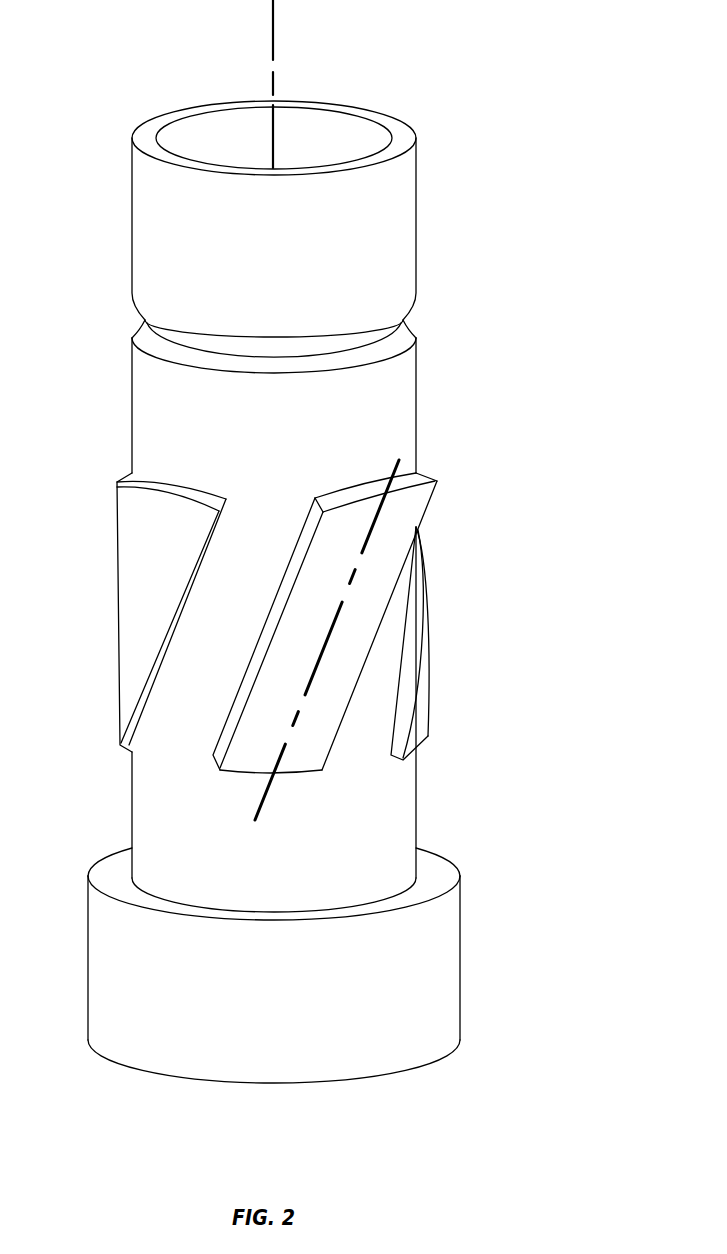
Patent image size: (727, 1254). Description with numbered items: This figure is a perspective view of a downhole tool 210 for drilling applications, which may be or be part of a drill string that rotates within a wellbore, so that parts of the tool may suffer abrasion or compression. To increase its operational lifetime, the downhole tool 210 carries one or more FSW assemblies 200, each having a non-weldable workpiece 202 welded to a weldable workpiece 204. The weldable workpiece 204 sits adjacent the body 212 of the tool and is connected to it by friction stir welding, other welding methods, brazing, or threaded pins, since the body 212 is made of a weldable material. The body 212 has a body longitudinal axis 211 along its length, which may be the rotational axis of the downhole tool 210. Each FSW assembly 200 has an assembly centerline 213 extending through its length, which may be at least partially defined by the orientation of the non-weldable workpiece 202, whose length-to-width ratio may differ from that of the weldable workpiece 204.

The FSW assembly 200 is at (476, 528).
The non-weldable workpiece 202 is at (435, 480).
The weldable workpiece 204 is at (416, 473).
The downhole tool 210 is at (490, 173).
The body longitudinal axis 211 is at (273, 26).
The body 212 is at (377, 412).
The assembly centerline 213 is at (277, 788).